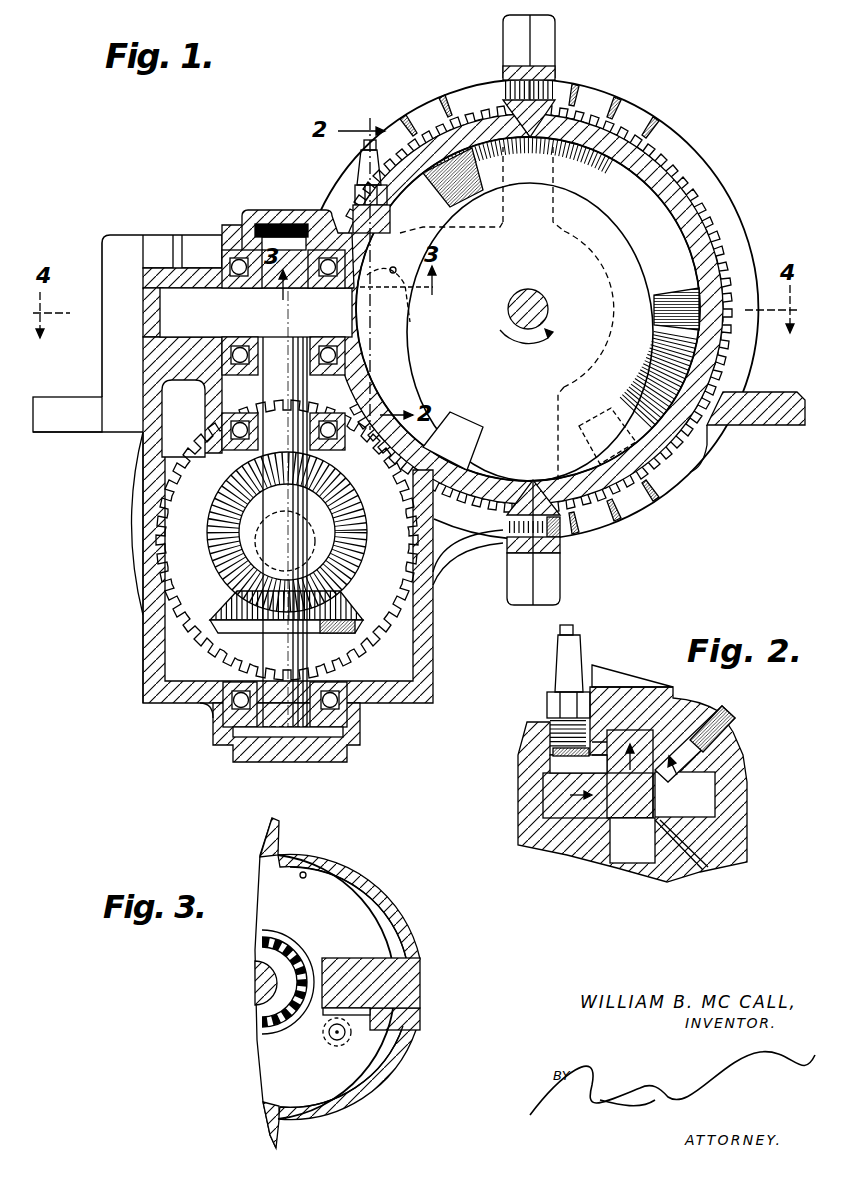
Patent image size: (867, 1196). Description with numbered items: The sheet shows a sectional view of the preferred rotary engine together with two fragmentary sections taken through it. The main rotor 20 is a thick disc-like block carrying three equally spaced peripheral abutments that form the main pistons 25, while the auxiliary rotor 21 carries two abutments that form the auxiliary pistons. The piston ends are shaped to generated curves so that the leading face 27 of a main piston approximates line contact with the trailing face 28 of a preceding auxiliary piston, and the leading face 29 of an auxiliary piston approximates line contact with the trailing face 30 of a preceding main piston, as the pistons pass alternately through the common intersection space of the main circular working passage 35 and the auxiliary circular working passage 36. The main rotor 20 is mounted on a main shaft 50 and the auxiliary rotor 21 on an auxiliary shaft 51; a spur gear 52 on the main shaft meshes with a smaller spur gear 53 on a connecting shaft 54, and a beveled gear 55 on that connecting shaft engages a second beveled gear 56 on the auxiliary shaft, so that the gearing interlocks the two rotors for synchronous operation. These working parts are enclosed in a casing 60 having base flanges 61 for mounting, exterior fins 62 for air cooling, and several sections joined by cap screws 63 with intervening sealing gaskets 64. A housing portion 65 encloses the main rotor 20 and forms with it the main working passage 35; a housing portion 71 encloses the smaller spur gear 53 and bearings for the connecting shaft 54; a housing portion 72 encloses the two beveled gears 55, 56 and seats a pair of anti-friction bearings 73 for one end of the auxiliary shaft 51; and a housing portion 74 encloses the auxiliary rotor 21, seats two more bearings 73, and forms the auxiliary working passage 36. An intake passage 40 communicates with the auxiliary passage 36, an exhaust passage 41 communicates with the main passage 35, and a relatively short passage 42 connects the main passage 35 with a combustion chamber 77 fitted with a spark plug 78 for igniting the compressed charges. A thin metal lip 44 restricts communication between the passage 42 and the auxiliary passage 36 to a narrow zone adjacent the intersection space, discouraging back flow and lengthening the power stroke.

In FIG. 1, the main rotor 20 is at (665, 210).
In FIG. 2, the main rotor 20 is at (645, 722).
In FIG. 3, the main rotor 20 is at (423, 980).
In FIG. 1, the auxiliary rotor 21 is at (185, 285).
In FIG. 2, the auxiliary rotor 21 is at (541, 812).
In FIG. 1, the main pistons 25 is at (430, 125).
In FIG. 3, the main pistons 25 is at (350, 957).
In FIG. 1, the leading face of main piston 27 is at (466, 178).
In FIG. 1, the trailing face of auxiliary piston 28 is at (320, 285).
In FIG. 2, the leading face of auxiliary piston 29 is at (632, 840).
In FIG. 1, the trailing face of main piston 30 is at (600, 165).
In FIG. 2, the trailing face of main piston 30 is at (660, 790).
In FIG. 1, the main circular working passage 35 is at (565, 130).
In FIG. 3, the auxiliary circular working passage 36 is at (306, 872).
In FIG. 2, the intake passage 40 is at (722, 752).
In FIG. 2, the exhaust passage 41 is at (702, 872).
In FIG. 1, the combustion chamber passage 42 is at (395, 266).
In FIG. 2, the combustion chamber passage 42 is at (598, 745).
In FIG. 3, the combustion chamber passage 42 is at (329, 1034).
In FIG. 1, the metal lip 44 is at (409, 300).
In FIG. 2, the metal lip 44 is at (570, 768).
In FIG. 3, the metal lip 44 is at (362, 1020).
In FIG. 1, the main shaft 50 is at (540, 298).
In FIG. 1, the auxiliary shaft 51 is at (283, 224).
In FIG. 1, the spur gear 52 is at (472, 512).
In FIG. 1, the smaller spur gear 53 is at (212, 625).
In FIG. 1, the connecting shaft 54 is at (235, 567).
In FIG. 1, the beveled gear 55 is at (368, 535).
In FIG. 1, the second beveled gear 56 is at (345, 602).
In FIG. 1, the casing 60 is at (468, 560).
In FIG. 1, the base flanges 61 is at (775, 395).
In FIG. 1, the exterior fins 62 is at (660, 135).
In FIG. 1, the cap screws 63 is at (548, 92).
In FIG. 1, the sealing gaskets 64 is at (525, 552).
In FIG. 1, the housing portion 65 is at (722, 250).
In FIG. 1, the housing portion 71 is at (128, 540).
In FIG. 1, the housing portion 72 is at (150, 655).
In FIG. 1, the anti-friction bearings 73 is at (237, 258).
In FIG. 3, the anti-friction bearings 73 is at (262, 950).
In FIG. 3, the housing portion 74 is at (352, 898).
In FIG. 2, the combustion chamber 77 is at (560, 757).
In FIG. 1, the spark plug 78 is at (362, 165).
In FIG. 2, the spark plug 78 is at (556, 674).
In FIG. 3, the spark plug 78 is at (352, 1064).